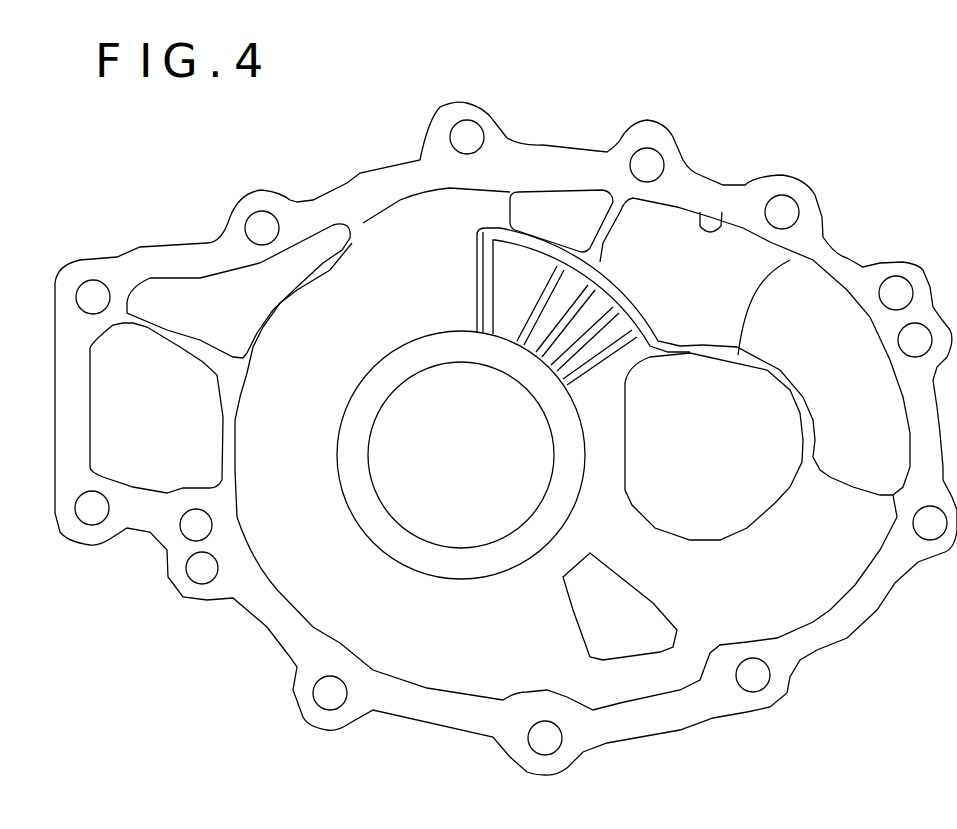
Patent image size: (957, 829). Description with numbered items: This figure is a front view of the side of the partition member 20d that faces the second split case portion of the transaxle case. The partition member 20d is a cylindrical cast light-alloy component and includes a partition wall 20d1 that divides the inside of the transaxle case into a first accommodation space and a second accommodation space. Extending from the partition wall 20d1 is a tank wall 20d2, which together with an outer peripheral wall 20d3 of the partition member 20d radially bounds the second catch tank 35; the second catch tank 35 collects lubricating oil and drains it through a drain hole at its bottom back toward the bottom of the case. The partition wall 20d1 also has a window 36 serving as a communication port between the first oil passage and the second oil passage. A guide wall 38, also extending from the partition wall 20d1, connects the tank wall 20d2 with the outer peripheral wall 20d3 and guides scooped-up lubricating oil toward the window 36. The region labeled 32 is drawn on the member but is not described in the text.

The partition member 20d is at (843, 181).
The partition wall 20d1 is at (787, 580).
The tank wall 20d2 is at (790, 260).
The outer peripheral wall 20d3 is at (725, 218).
The recess 32 is at (187, 452).
The second catch tank 35 is at (740, 280).
The window 36 is at (552, 205).
The guide wall 38 is at (612, 220).